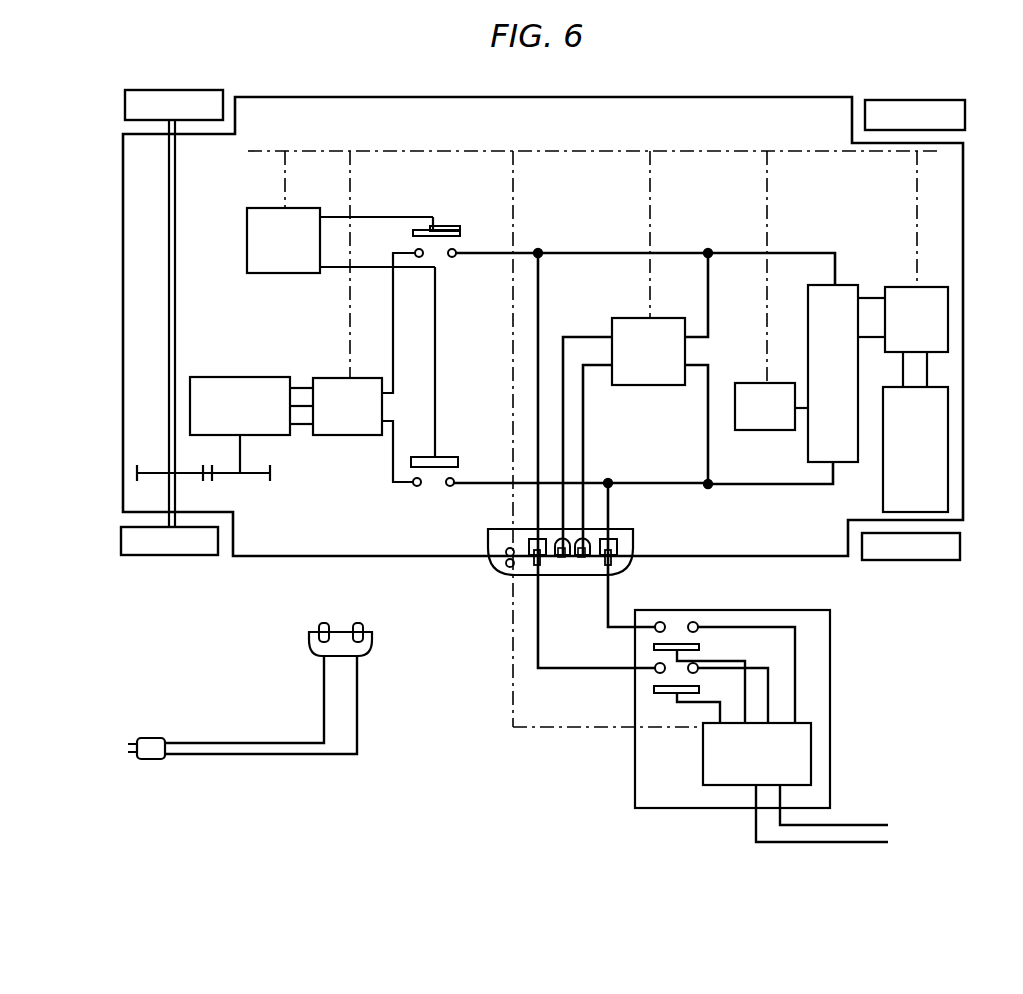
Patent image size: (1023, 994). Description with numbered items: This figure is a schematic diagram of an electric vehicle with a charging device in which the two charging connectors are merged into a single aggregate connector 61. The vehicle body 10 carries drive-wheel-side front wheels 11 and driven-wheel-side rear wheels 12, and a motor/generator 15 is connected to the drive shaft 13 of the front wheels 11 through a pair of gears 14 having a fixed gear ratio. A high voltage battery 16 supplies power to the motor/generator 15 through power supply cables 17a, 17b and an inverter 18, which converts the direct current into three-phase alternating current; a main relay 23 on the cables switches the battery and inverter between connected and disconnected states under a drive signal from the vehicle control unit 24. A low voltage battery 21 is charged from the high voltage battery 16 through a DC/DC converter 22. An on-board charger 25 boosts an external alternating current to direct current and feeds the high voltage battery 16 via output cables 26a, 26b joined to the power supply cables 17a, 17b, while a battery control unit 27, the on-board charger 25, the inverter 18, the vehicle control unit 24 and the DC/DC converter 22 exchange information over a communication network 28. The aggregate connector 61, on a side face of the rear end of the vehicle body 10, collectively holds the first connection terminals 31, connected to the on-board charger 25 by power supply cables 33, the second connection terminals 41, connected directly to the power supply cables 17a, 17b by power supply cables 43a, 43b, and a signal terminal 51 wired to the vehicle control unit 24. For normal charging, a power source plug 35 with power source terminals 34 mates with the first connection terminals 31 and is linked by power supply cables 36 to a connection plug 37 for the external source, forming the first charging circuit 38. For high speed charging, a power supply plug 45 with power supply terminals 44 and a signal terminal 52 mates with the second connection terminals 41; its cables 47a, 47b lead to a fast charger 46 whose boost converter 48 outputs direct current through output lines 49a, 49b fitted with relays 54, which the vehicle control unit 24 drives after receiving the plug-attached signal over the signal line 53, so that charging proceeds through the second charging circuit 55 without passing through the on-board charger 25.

The vehicle body 10 is at (795, 97).
The front wheels 11 is at (204, 95).
The rear wheels 12 is at (948, 106).
The drive shaft 13 is at (167, 307).
The pair of gears 14 is at (254, 482).
The motor/generator 15 is at (276, 377).
The high voltage battery 16 is at (851, 285).
The power supply cable 17a is at (681, 251).
The power supply cable 17b is at (795, 486).
The inverter 18 is at (372, 378).
The low voltage battery 21 is at (948, 397).
The DC/DC converter 22 is at (948, 298).
The main relay 23 is at (448, 228).
The vehicle control unit 24 is at (309, 273).
The on-board charger 25 is at (669, 386).
The output cable 26a is at (711, 302).
The output cable 26b is at (711, 450).
The battery control unit 27 is at (787, 383).
The communication network 28 is at (613, 151).
The first connection terminals 31 is at (562, 574).
The power supply cables 33 is at (565, 400).
The power source terminals 34 is at (324, 622).
The power source plug 35 is at (310, 648).
The power supply cables 36 is at (357, 712).
The connection plug 37 is at (147, 738).
The first charging circuit 38 is at (595, 309).
The second connection terminals 41 is at (530, 540).
The power supply cable 43a is at (538, 393).
The power supply cable 43b is at (605, 483).
The power supply terminals 44 is at (534, 562).
The power supply plug 45 is at (545, 555).
The fast charger 46 is at (830, 630).
The power supply cable 47a is at (583, 668).
The power supply cable 47b is at (615, 622).
The boost converter 48 is at (811, 750).
The output line 49a is at (768, 676).
The output line 49b is at (795, 705).
The signal terminal 51 is at (505, 551).
The signal terminal 52 is at (505, 565).
The signal line 53 is at (521, 727).
The relays 54 is at (703, 647).
The second charging circuit 55 is at (791, 238).
The aggregate connector 61 is at (634, 543).